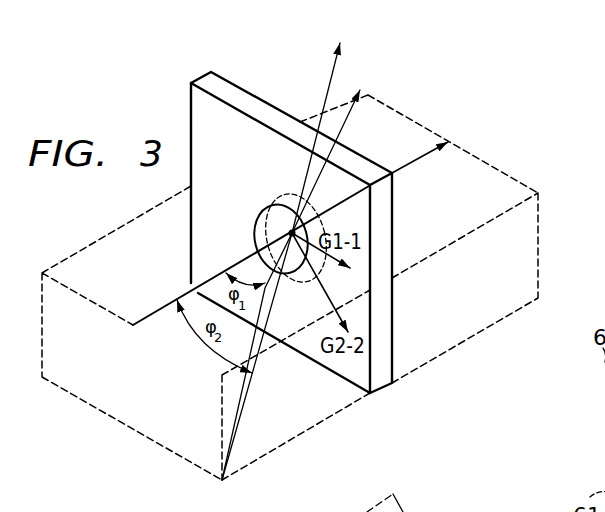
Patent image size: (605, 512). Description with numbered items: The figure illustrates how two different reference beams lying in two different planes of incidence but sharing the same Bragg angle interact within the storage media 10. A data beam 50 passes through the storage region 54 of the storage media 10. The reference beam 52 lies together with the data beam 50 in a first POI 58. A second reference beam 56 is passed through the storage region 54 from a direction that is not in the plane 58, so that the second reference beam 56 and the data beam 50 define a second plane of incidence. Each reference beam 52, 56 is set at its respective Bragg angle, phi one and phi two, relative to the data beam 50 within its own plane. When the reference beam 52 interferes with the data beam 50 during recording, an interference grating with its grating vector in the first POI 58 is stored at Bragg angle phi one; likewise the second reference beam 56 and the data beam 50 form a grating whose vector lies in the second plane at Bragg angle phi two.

The storage media 10 is at (208, 81).
The data beam 50 is at (424, 150).
The reference beam 52 is at (350, 105).
The storage region 54 is at (282, 198).
The second reference beam 56 is at (322, 95).
The first POI 58 is at (497, 177).